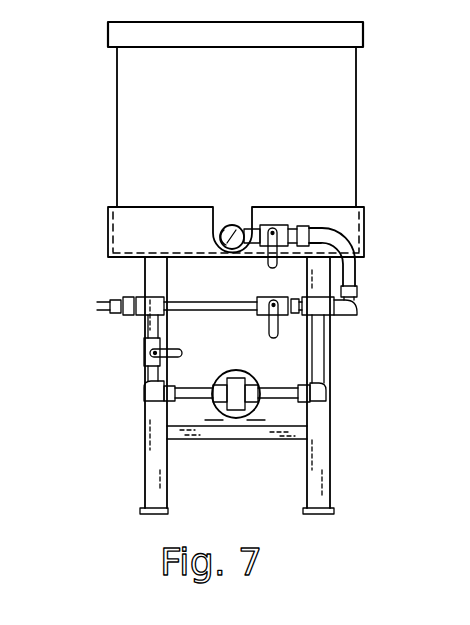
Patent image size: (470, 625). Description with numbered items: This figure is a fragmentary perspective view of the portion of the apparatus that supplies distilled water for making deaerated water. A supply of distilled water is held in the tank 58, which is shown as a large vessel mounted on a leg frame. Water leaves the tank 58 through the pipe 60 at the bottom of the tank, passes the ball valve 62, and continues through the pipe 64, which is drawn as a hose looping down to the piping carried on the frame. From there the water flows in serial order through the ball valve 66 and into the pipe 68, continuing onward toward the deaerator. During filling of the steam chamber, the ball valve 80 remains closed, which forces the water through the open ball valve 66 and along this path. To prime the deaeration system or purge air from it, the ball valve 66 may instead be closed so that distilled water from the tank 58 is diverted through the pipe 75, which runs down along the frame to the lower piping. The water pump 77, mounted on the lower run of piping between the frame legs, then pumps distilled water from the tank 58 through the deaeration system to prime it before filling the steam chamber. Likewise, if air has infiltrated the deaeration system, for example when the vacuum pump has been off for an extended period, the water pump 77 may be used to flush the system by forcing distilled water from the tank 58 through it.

The tank 58 is at (300, 115).
The pipe 60 is at (212, 258).
The ball valve 62 is at (275, 268).
The pipe 64 is at (358, 276).
The ball valve 66 is at (258, 300).
The pipe 68 is at (104, 305).
The pipe 75 is at (326, 395).
The water pump 77 is at (233, 402).
The ball valve 80 is at (145, 355).